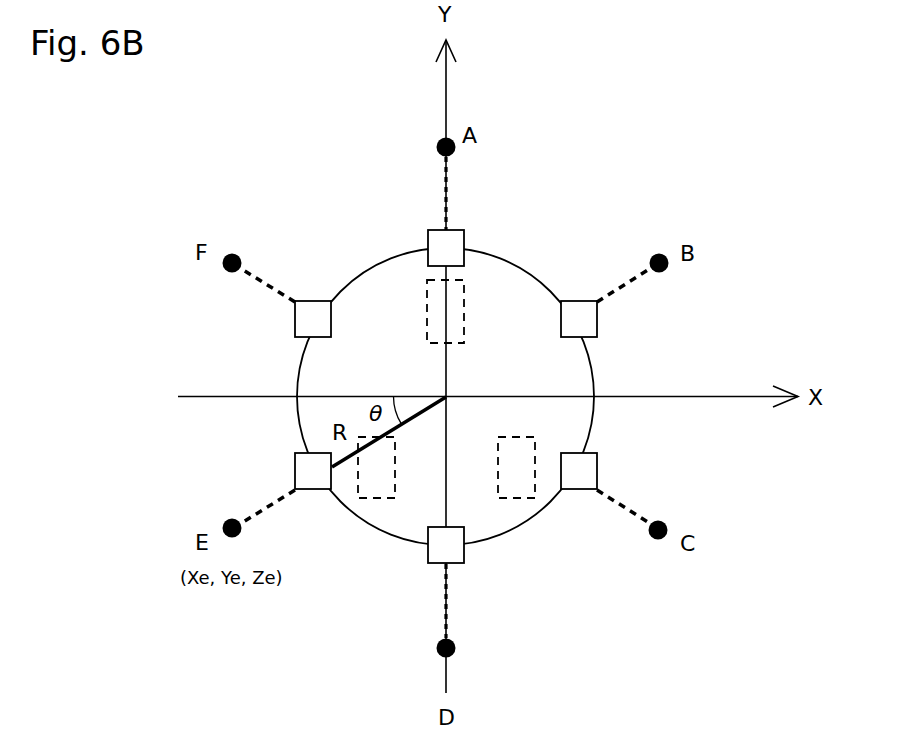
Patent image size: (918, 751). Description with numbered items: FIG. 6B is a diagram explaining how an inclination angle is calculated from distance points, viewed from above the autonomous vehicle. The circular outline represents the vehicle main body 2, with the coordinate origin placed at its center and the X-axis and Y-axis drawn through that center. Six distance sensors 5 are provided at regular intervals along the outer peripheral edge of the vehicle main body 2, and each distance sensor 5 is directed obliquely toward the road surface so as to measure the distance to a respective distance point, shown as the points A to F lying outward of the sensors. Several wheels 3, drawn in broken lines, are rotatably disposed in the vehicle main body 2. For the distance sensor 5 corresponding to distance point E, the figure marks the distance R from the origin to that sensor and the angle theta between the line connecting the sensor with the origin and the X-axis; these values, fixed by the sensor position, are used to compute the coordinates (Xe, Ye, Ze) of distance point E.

The vehicle main body 2 is at (518, 268).
The wheel 3 is at (427, 298).
The distance sensor 5 is at (437, 242).